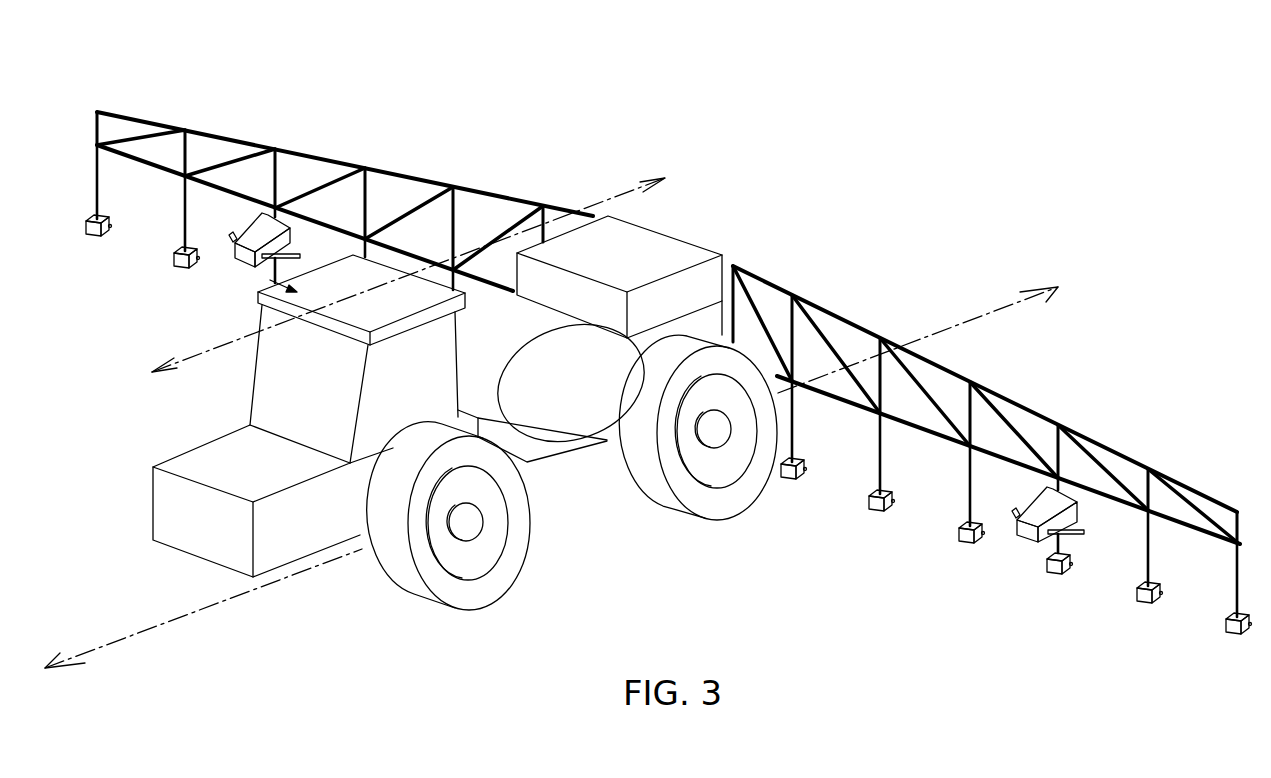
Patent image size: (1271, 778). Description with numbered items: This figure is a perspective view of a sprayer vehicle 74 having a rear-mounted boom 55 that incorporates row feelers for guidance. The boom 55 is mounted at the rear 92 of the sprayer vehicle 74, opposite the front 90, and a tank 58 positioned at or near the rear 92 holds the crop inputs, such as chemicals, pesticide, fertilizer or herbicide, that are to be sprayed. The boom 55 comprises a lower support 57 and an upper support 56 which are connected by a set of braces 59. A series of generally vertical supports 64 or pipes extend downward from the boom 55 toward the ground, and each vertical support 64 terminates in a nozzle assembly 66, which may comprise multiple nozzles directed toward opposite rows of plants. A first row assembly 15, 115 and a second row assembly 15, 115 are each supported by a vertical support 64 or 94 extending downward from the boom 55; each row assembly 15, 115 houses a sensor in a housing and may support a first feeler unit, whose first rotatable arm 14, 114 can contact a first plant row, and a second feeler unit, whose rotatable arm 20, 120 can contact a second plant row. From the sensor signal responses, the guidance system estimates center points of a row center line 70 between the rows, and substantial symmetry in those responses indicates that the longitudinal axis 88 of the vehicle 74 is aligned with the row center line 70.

The first rotatable arm 14 is at (553, 435).
The first rotatable arm 114 is at (231, 241).
The row assembly 15 is at (641, 364).
The row assembly 115 is at (250, 247).
The rotatable arm 20 is at (715, 335).
The rotatable arm 120 is at (290, 247).
The boom 55 is at (888, 238).
The upper support 56 is at (493, 197).
The lower support 57 is at (208, 190).
The tank 58 is at (506, 339).
The braces 59 is at (338, 162).
The vertical support 64 is at (181, 179).
The vertical support 94 is at (268, 214).
The nozzle assembly 66 is at (89, 238).
The row center line 70 is at (112, 643).
The sprayer vehicle 74 is at (268, 280).
The longitudinal axis 88 is at (618, 178).
The front 90 is at (187, 510).
The rear 92 is at (665, 230).